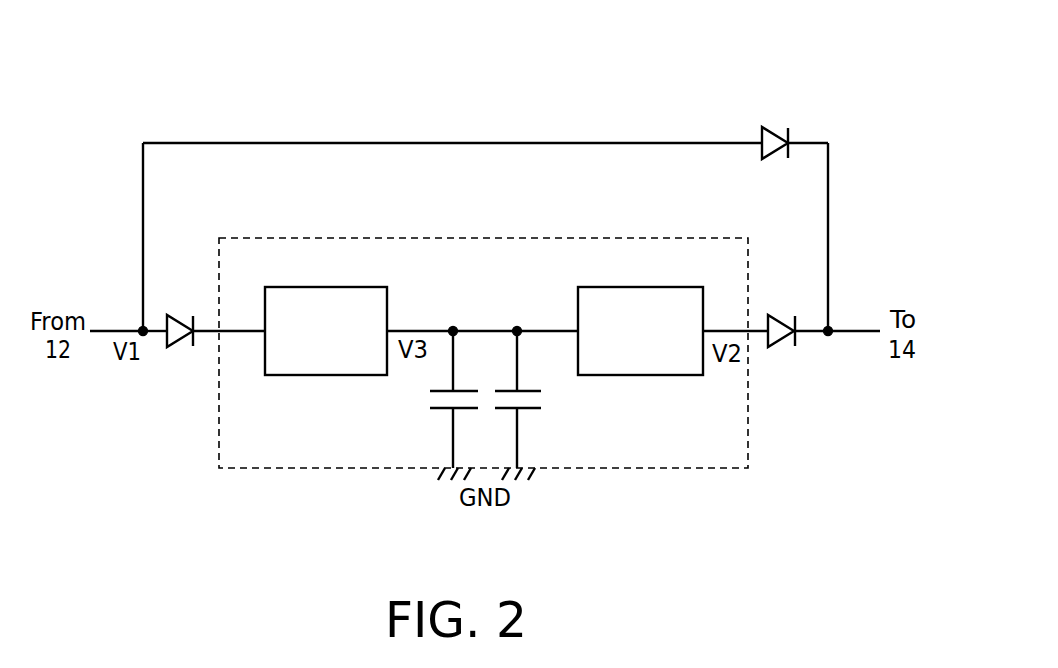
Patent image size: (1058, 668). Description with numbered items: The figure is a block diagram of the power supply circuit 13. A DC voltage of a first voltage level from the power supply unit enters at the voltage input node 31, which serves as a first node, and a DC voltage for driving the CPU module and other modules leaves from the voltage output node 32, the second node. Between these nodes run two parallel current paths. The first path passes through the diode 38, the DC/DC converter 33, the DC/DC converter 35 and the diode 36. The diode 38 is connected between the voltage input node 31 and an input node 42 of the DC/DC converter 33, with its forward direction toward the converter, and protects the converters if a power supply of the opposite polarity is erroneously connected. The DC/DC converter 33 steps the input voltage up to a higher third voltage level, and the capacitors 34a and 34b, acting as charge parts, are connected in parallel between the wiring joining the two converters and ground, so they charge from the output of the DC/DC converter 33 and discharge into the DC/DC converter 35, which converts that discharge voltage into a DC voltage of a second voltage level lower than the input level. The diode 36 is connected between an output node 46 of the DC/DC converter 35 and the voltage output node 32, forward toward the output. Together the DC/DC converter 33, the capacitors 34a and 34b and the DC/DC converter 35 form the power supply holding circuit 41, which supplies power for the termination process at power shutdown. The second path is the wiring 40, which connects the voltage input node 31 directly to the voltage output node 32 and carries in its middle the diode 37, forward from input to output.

The power supply circuit 13 is at (878, 46).
The voltage input node 31 is at (118, 331).
The voltage output node 32 is at (866, 331).
The DC/DC converter 33 is at (318, 286).
The capacitor 34a is at (428, 401).
The capacitor 34b is at (544, 401).
The DC/DC converter 35 is at (633, 286).
The diode 36 is at (782, 345).
The diode 37 is at (772, 127).
The diode 38 is at (182, 345).
The wiring 40 is at (577, 141).
The power supply holding circuit 41 is at (698, 236).
The input node 42 is at (264, 330).
The output node 46 is at (704, 330).